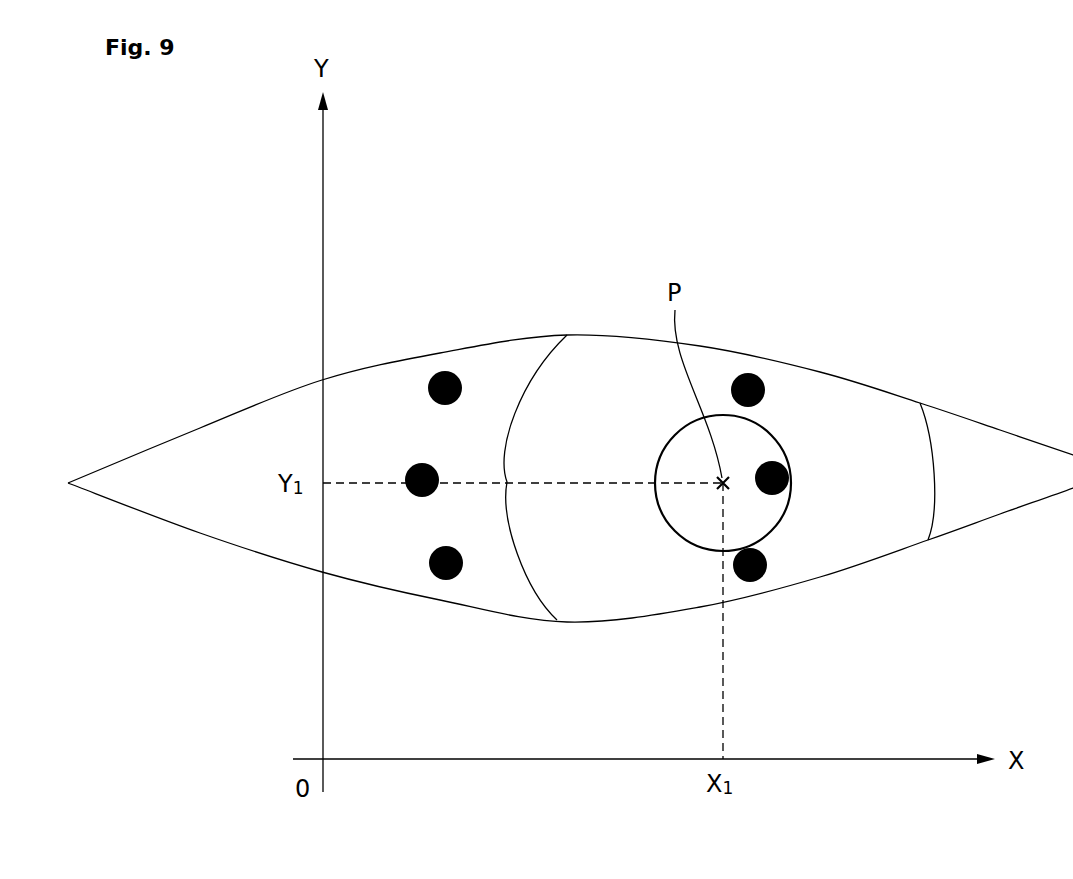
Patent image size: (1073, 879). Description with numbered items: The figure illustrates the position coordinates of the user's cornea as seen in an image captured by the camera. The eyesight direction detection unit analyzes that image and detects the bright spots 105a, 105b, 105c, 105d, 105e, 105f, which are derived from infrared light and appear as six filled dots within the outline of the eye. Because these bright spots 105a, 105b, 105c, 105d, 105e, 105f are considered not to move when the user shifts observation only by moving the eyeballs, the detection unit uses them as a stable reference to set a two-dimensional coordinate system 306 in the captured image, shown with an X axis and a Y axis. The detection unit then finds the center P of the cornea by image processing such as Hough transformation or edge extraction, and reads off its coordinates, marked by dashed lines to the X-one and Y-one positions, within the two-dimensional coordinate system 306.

The two-dimensional coordinate system 306 is at (323, 212).
The bright spot 105a is at (439, 373).
The bright spot 105b is at (438, 476).
The bright spot 105c is at (448, 580).
The bright spot 105d is at (755, 373).
The bright spot 105e is at (789, 475).
The bright spot 105f is at (752, 582).